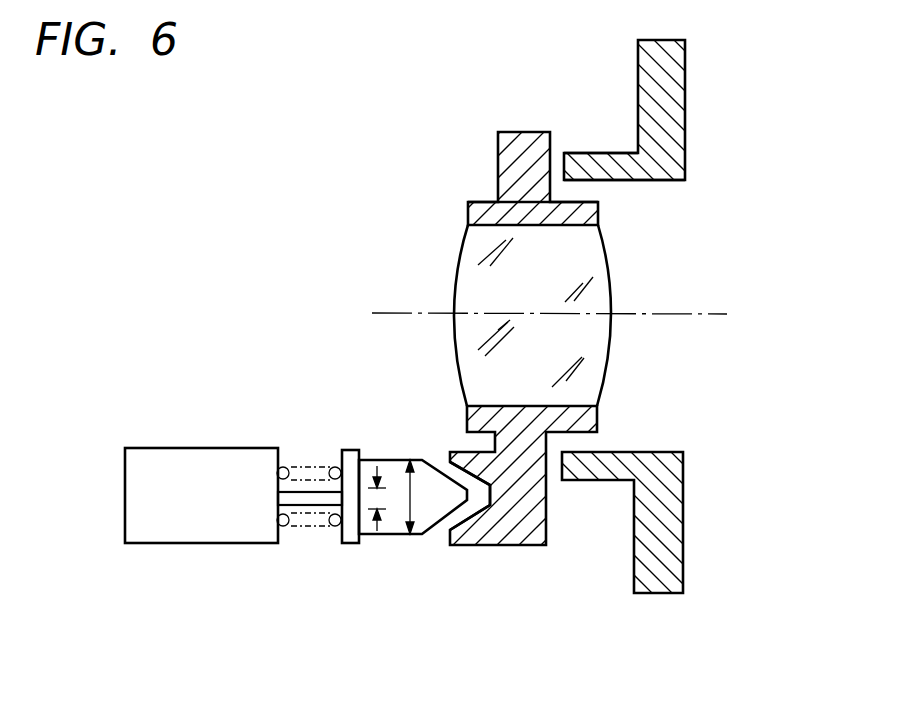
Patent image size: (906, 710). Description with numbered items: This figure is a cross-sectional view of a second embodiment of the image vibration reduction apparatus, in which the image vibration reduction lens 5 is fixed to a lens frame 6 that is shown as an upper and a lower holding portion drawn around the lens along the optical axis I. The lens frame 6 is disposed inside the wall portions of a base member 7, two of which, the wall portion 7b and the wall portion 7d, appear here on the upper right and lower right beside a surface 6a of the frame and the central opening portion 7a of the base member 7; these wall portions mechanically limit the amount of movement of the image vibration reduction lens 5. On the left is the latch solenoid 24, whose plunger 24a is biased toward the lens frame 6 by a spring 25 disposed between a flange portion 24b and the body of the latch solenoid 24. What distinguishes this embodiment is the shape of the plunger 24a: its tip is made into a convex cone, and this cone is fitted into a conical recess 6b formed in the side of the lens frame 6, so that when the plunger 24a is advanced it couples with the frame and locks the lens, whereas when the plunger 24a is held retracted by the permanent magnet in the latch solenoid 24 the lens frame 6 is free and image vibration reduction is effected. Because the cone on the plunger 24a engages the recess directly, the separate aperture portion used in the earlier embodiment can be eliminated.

The image vibration reduction lens 5 is at (470, 249).
The lens frame 6 is at (512, 153).
The flange of lens holder 6a is at (592, 196).
The V-shaped notch of lens holder 6b is at (472, 500).
The base member 7 is at (672, 80).
The central opening portion 7a is at (652, 182).
The wall portion 7b is at (606, 158).
The wall portion 7d is at (605, 481).
The latch solenoid 24 is at (202, 531).
The plunger 24a is at (390, 536).
The flange portion 24b is at (352, 456).
The spring 25 is at (300, 466).
The optical axis I is at (408, 312).